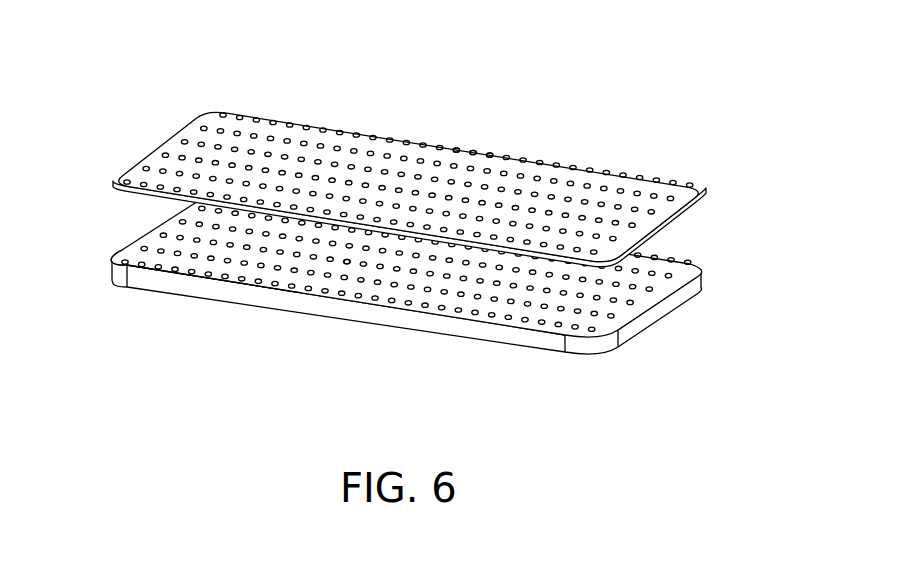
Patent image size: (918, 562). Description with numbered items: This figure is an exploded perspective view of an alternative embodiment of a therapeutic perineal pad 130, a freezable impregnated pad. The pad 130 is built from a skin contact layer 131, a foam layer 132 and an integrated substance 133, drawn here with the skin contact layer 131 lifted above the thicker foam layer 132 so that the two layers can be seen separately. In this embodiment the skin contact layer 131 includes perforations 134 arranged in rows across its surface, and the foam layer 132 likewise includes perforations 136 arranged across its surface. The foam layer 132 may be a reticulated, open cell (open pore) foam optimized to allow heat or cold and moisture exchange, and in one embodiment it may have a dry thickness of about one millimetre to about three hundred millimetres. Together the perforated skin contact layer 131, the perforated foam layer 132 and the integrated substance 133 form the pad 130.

The therapeutic perineal pad 130 is at (720, 209).
The skin contact layer 131 is at (409, 157).
The foam layer 132 is at (388, 263).
The integrated substance 133 is at (140, 258).
The perforations 134 is at (488, 169).
The perforations 136 is at (344, 263).